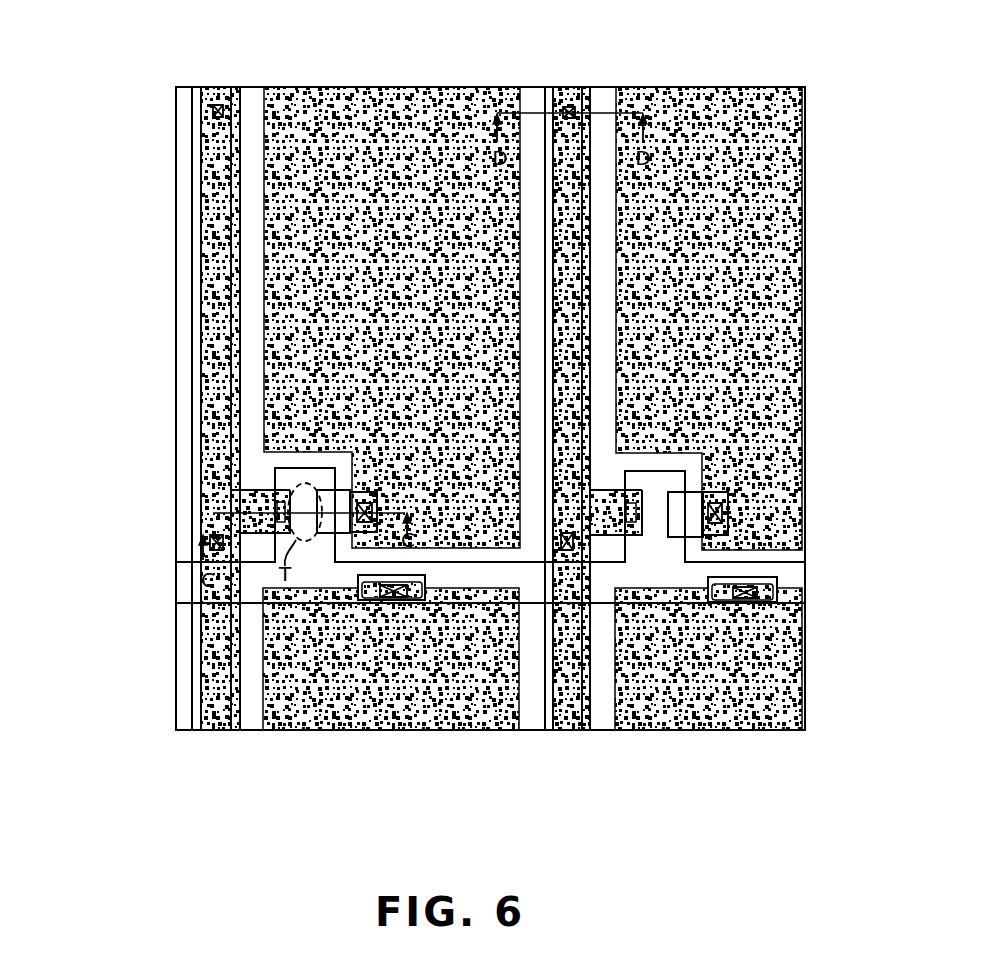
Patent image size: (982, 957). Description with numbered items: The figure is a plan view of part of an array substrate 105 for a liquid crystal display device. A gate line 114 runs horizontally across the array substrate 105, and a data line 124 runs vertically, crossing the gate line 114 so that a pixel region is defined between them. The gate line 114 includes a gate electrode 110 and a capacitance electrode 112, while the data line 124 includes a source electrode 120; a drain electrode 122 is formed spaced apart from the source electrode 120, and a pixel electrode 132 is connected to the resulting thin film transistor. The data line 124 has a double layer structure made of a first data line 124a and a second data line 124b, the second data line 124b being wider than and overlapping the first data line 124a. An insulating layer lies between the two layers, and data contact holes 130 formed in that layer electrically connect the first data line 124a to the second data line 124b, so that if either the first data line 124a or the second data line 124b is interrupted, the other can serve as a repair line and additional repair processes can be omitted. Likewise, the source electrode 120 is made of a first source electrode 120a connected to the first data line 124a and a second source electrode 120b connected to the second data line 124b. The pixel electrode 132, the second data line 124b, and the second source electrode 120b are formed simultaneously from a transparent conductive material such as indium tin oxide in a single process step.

The array substrate 105 is at (812, 75).
The gate electrode 110 is at (334, 468).
The capacitance electrode 112 is at (448, 588).
The gate line 114 is at (482, 577).
The source electrode 120 is at (436, 439).
The first source electrode 120a is at (264, 488).
The second source electrode 120b is at (290, 488).
The drain electrode 122 is at (352, 478).
The data line 124 is at (299, 408).
The first data line 124a is at (200, 423).
The second data line 124b is at (192, 467).
The data contact hole 130 is at (212, 108).
The pixel electrode 132 is at (362, 116).